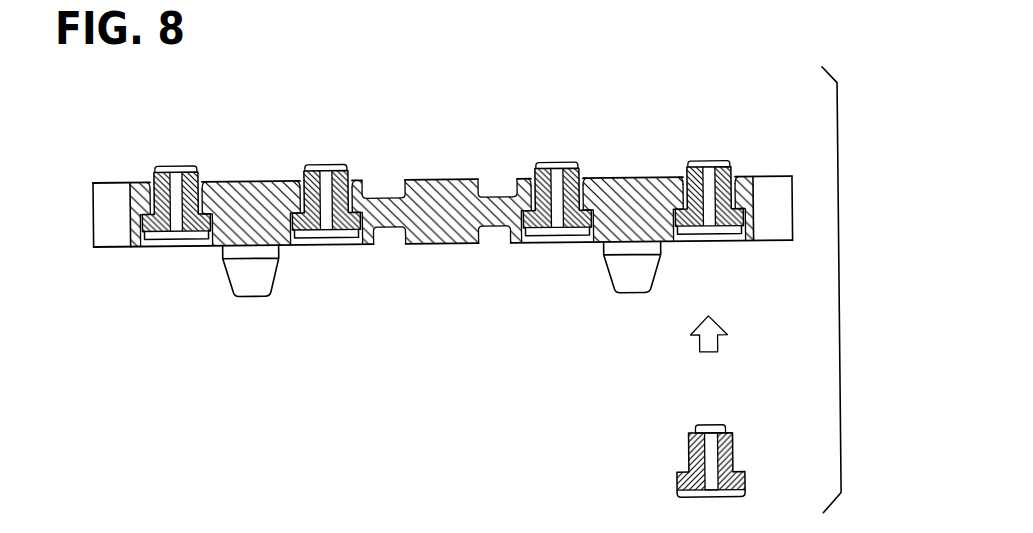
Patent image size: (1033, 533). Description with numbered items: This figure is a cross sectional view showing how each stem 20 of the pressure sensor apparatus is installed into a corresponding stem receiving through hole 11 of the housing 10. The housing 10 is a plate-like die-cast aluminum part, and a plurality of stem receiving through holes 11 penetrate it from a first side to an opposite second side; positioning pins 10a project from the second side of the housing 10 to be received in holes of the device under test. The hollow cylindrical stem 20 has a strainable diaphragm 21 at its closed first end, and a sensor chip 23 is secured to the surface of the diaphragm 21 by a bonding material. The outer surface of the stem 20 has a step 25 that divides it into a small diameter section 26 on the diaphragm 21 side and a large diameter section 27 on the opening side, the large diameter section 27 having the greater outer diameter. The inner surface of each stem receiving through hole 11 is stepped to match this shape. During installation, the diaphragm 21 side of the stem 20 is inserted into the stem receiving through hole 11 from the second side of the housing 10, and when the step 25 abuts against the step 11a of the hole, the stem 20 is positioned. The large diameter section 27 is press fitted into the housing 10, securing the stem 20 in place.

The housing 10 is at (773, 258).
The positioning pin 10a is at (249, 299).
The stem receiving through hole 11 is at (152, 250).
The step 11a is at (142, 198).
The stem 20 is at (199, 174).
The diaphragm 21 is at (726, 439).
The sensor chip 23 is at (710, 431).
The step 25 is at (676, 478).
The small diameter section 26 is at (688, 443).
The large diameter section 27 is at (675, 499).